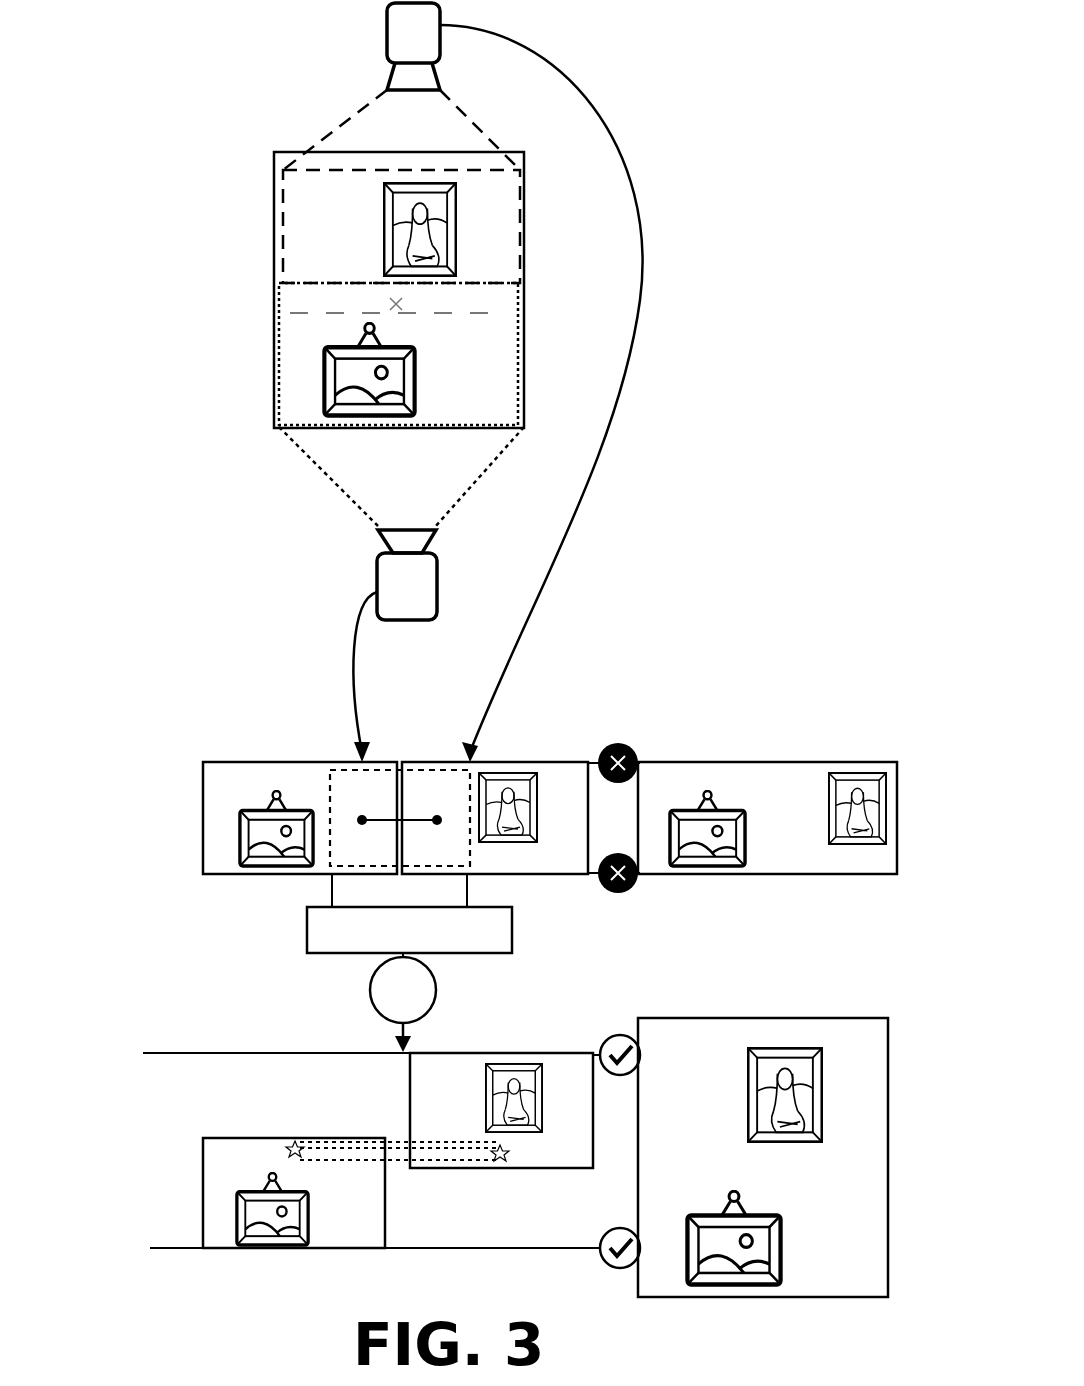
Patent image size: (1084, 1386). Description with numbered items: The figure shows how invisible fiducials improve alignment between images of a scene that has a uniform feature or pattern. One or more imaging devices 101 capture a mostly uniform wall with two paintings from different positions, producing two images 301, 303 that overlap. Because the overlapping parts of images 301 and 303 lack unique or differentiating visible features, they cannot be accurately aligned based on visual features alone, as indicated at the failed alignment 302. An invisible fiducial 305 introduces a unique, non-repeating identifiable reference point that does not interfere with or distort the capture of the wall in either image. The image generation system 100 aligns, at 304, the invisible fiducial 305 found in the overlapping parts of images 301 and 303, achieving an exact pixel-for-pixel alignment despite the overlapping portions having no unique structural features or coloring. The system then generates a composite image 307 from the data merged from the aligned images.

The imaging device 101 is at (400, 42).
The image 303 is at (475, 168).
The image 301 is at (518, 366).
The invisible fiducial 305 is at (400, 297).
The alignment based on visual features 302 is at (203, 763).
The image generation system 100 is at (397, 939).
The aligning of invisible fiducial 304 is at (390, 1000).
The composite image 307 is at (773, 1018).